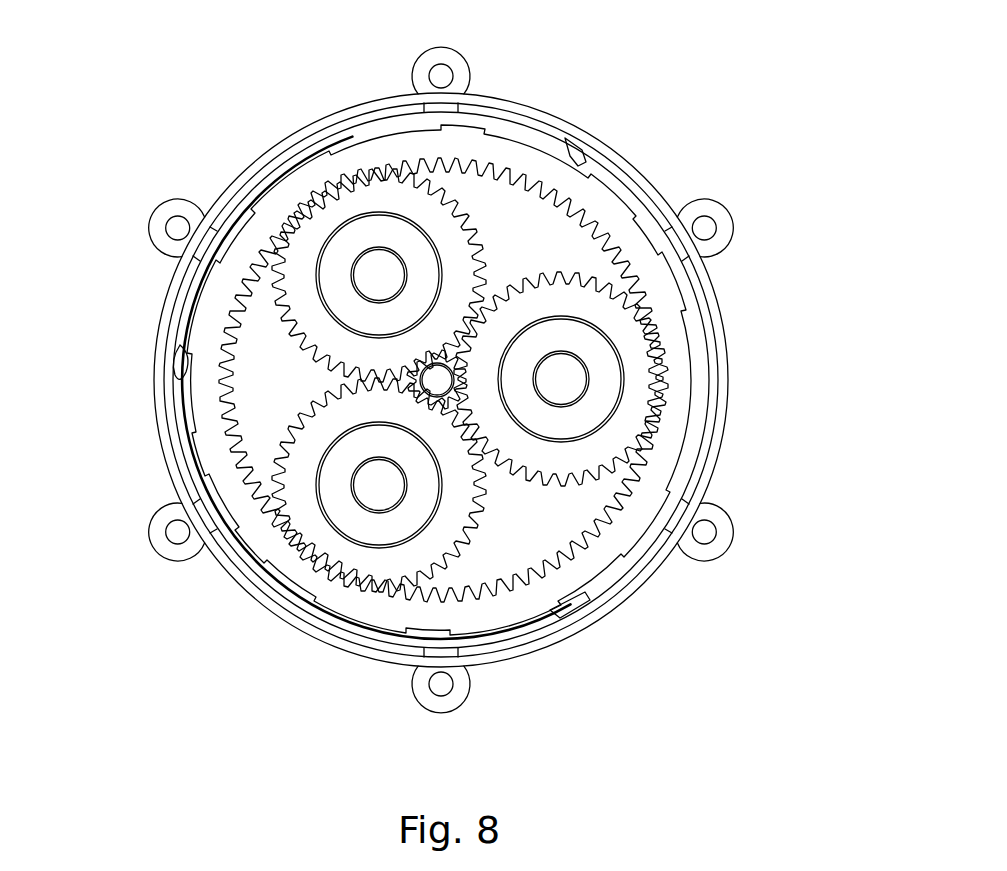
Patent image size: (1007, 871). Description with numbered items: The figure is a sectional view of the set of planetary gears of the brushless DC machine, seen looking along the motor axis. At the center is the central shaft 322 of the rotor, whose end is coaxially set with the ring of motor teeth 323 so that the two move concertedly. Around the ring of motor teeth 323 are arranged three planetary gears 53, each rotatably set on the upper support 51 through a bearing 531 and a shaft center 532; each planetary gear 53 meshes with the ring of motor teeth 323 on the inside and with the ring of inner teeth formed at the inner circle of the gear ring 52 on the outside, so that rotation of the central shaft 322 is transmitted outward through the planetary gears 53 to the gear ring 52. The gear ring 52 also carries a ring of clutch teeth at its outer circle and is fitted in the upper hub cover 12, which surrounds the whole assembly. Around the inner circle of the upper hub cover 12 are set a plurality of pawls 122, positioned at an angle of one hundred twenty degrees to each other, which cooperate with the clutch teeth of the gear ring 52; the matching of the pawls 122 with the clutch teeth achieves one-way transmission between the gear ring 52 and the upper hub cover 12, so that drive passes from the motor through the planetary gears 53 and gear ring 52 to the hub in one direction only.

The upper hub cover 12 is at (338, 110).
The pawls 122 is at (573, 147).
The upper support 51 is at (497, 190).
The gear ring 52 is at (610, 207).
The planetary gear 53 is at (638, 368).
The bearing 531 is at (593, 345).
The shaft center 532 is at (567, 378).
The central shaft 322 is at (430, 385).
The ring of motor teeth 323 is at (447, 395).